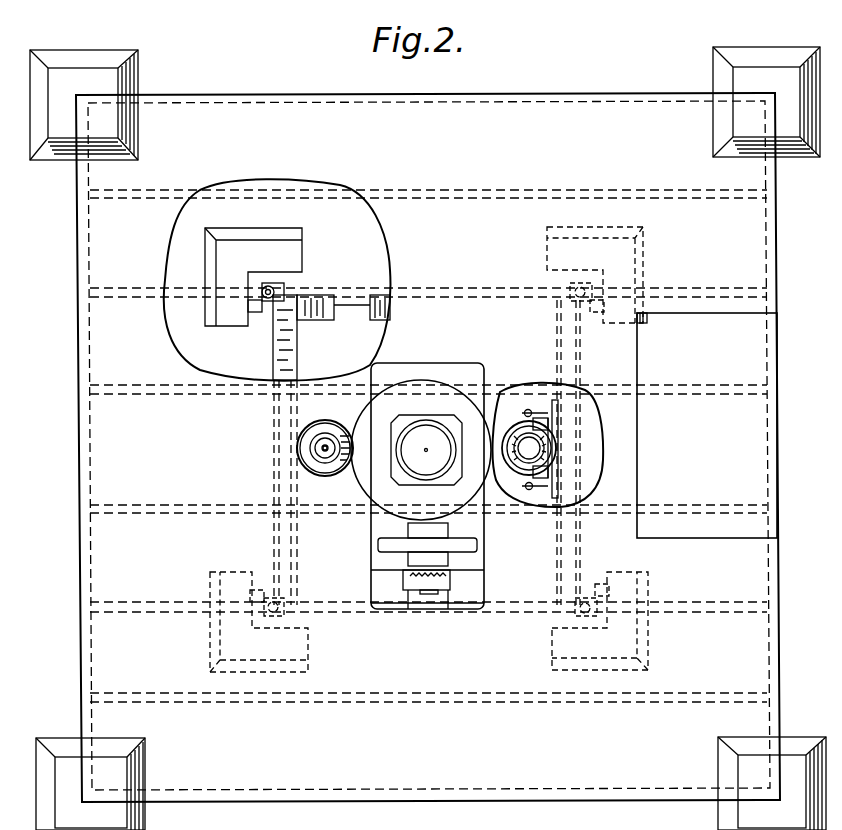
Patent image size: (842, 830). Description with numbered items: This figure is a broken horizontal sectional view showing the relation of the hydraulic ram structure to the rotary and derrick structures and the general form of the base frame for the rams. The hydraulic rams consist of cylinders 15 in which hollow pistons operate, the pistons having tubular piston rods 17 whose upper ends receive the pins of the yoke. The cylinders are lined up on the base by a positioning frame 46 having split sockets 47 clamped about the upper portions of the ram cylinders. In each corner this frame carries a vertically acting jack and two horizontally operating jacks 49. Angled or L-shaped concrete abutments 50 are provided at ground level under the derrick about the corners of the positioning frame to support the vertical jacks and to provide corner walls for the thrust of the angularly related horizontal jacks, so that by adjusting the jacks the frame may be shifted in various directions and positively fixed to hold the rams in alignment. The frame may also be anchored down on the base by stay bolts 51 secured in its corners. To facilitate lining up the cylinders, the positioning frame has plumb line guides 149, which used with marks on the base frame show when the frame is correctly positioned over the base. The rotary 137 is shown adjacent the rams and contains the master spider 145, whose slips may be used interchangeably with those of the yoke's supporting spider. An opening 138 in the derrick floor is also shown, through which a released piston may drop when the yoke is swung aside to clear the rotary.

The cylinder 15 is at (548, 458).
The tubular piston rod 17 is at (325, 462).
The positioning frame 46 is at (292, 362).
The split socket 47 is at (548, 432).
The horizontally operating jack 49 is at (278, 288).
The L-shaped concrete abutment 50 is at (305, 246).
The stay bolt 51 is at (262, 294).
The rotary 137 is at (386, 506).
The opening in the derrick floor 138 is at (312, 450).
The master spider 145 is at (428, 420).
The plumb line guide 149 is at (528, 490).